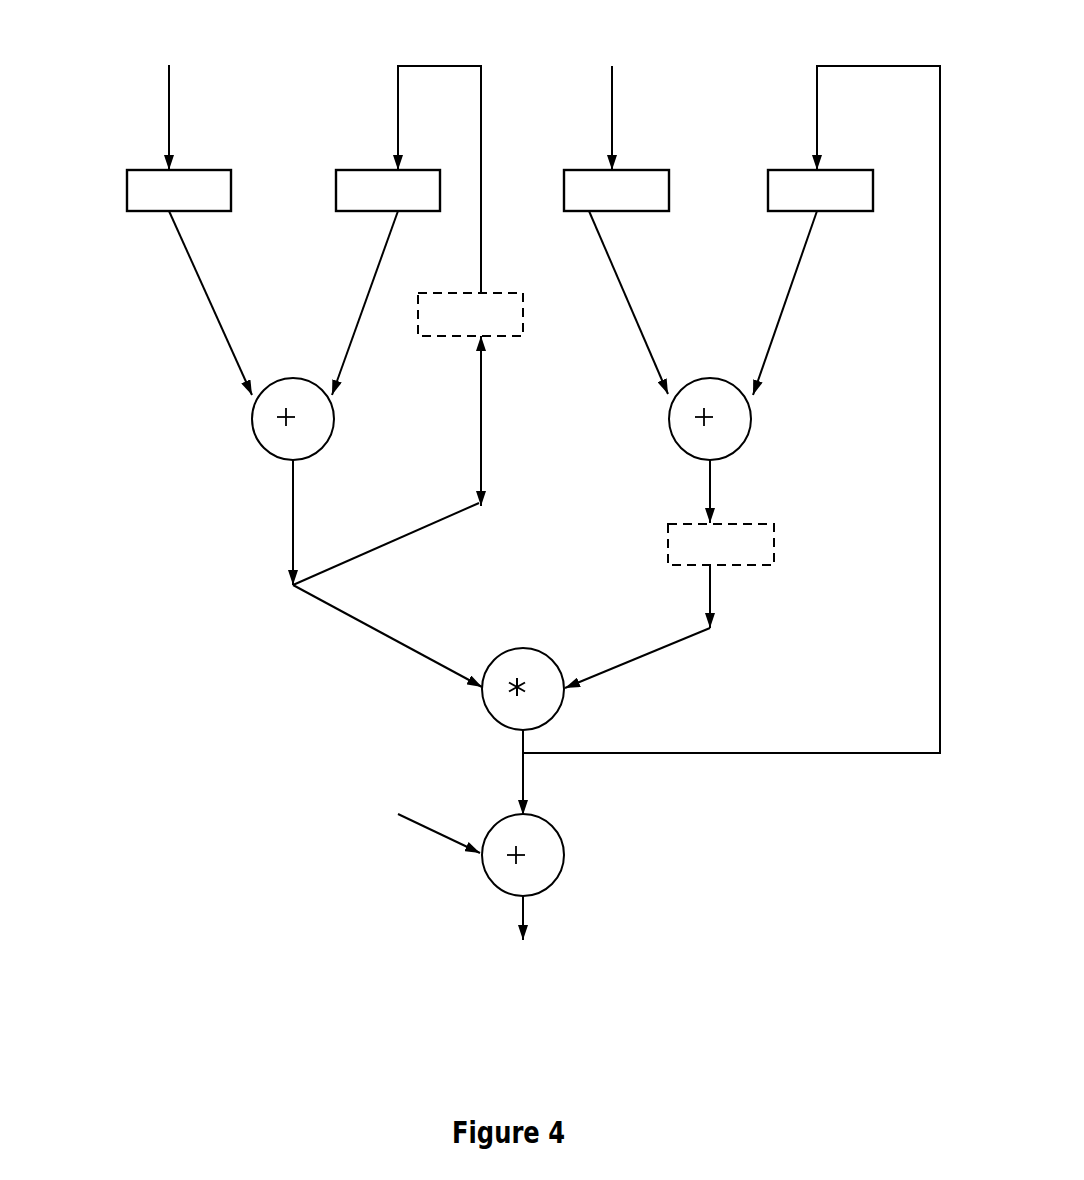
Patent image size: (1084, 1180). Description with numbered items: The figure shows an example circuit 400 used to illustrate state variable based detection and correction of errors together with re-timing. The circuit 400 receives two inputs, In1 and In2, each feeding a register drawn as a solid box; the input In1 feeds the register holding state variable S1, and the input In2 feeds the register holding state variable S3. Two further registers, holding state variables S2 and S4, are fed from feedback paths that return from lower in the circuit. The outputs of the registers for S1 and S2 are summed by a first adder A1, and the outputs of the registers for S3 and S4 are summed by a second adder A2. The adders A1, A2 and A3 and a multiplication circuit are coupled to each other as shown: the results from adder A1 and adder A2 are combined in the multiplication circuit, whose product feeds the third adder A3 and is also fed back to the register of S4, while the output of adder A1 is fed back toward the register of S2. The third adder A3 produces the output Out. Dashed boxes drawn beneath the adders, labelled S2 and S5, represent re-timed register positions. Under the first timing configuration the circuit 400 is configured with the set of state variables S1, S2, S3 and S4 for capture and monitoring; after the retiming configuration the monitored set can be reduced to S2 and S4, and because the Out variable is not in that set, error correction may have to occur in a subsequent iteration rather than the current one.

The example circuit 400 is at (80, 705).
The first input In1 is at (159, 92).
The second input In2 is at (611, 95).
The state variable S1 is at (184, 282).
The state variable S2 is at (427, 286).
The state variable S3 is at (617, 282).
The state variable S4 is at (731, 409).
The fifth register (re-timed storage element) S5 is at (701, 601).
The adder A1 is at (345, 532).
The adder A2 is at (687, 450).
The adder A3 is at (506, 855).
The Out variable Out is at (519, 948).